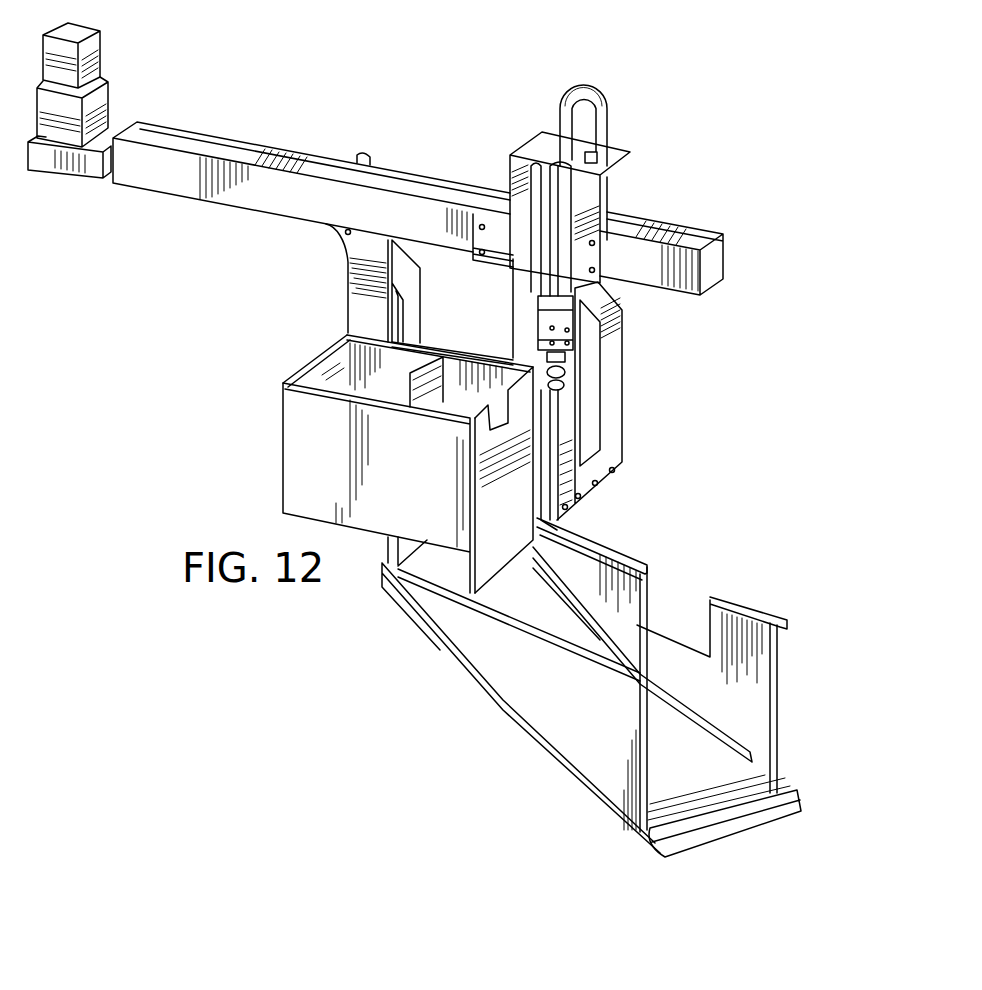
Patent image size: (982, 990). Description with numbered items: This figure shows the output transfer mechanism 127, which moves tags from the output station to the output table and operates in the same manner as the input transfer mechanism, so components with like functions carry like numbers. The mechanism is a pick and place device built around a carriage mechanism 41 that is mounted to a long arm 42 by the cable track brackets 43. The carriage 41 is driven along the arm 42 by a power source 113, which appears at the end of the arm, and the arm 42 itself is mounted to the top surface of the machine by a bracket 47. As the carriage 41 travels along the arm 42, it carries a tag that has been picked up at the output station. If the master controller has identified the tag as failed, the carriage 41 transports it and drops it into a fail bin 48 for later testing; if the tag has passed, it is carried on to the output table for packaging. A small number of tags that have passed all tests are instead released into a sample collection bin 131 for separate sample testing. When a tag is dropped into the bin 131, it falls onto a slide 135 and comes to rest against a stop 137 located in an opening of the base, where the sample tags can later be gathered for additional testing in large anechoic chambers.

The power source 113 is at (103, 46).
The transfer mechanism 127 is at (110, 104).
The arm 42 is at (712, 263).
The cable track brackets 43 is at (518, 192).
The carriage mechanism 41 is at (546, 313).
The bracket 47 is at (366, 278).
The fail bin 48 is at (337, 362).
The sample collection bin 131 is at (508, 493).
The slide 135 is at (747, 776).
The stop 137 is at (757, 815).